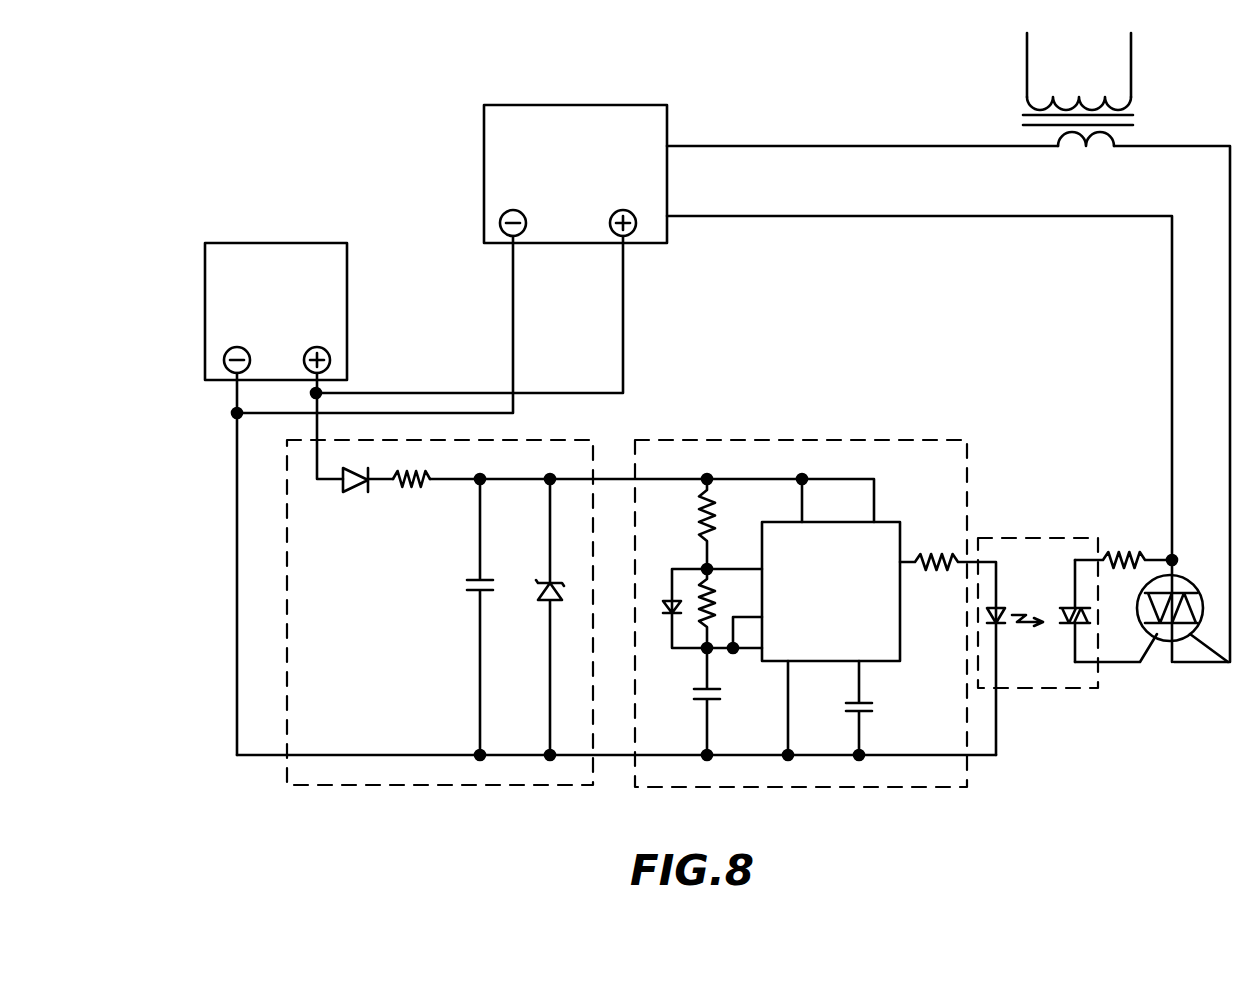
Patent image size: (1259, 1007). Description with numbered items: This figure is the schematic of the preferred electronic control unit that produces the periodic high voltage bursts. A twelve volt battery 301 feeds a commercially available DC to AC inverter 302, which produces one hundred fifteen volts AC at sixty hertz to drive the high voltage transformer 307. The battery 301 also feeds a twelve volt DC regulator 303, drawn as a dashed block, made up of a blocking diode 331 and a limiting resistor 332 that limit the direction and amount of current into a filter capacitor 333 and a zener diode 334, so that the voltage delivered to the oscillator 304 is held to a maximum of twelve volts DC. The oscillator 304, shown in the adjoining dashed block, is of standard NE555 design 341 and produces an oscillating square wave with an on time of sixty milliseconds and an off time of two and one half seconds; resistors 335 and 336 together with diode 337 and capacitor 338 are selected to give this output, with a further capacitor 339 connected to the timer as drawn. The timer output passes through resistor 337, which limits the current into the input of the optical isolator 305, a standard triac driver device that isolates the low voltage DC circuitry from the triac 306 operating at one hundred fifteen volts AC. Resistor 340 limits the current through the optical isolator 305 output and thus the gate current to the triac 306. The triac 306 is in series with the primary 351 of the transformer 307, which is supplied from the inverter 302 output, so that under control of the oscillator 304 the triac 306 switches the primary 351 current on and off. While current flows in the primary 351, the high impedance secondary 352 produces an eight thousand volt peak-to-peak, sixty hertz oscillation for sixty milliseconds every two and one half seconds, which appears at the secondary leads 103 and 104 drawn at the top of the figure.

The first output lead 103 is at (1025, 37).
The second output lead 104 is at (1133, 42).
The battery 301 is at (263, 250).
The DC to AC inverter 302 is at (497, 142).
The regulator 303 is at (300, 776).
The oscillator 304 is at (929, 773).
The optical isolator 305 is at (1090, 683).
The triac 306 is at (1230, 667).
The high voltage transformer 307 is at (1020, 118).
The blocking diode 331 is at (362, 492).
The limiting resistor 332 is at (457, 513).
The filter capacitor 333 is at (475, 573).
The zener diode 334 is at (540, 597).
The resistor 335 is at (713, 524).
The resistor 336 is at (720, 583).
The diode and resistor 337 is at (662, 608).
The capacitor 338 is at (723, 694).
The control capacitor 339 is at (876, 703).
The resistor 340 is at (1128, 552).
The NE555 design 341 is at (843, 521).
The primary 351 is at (1073, 147).
The secondary 352 is at (1133, 98).